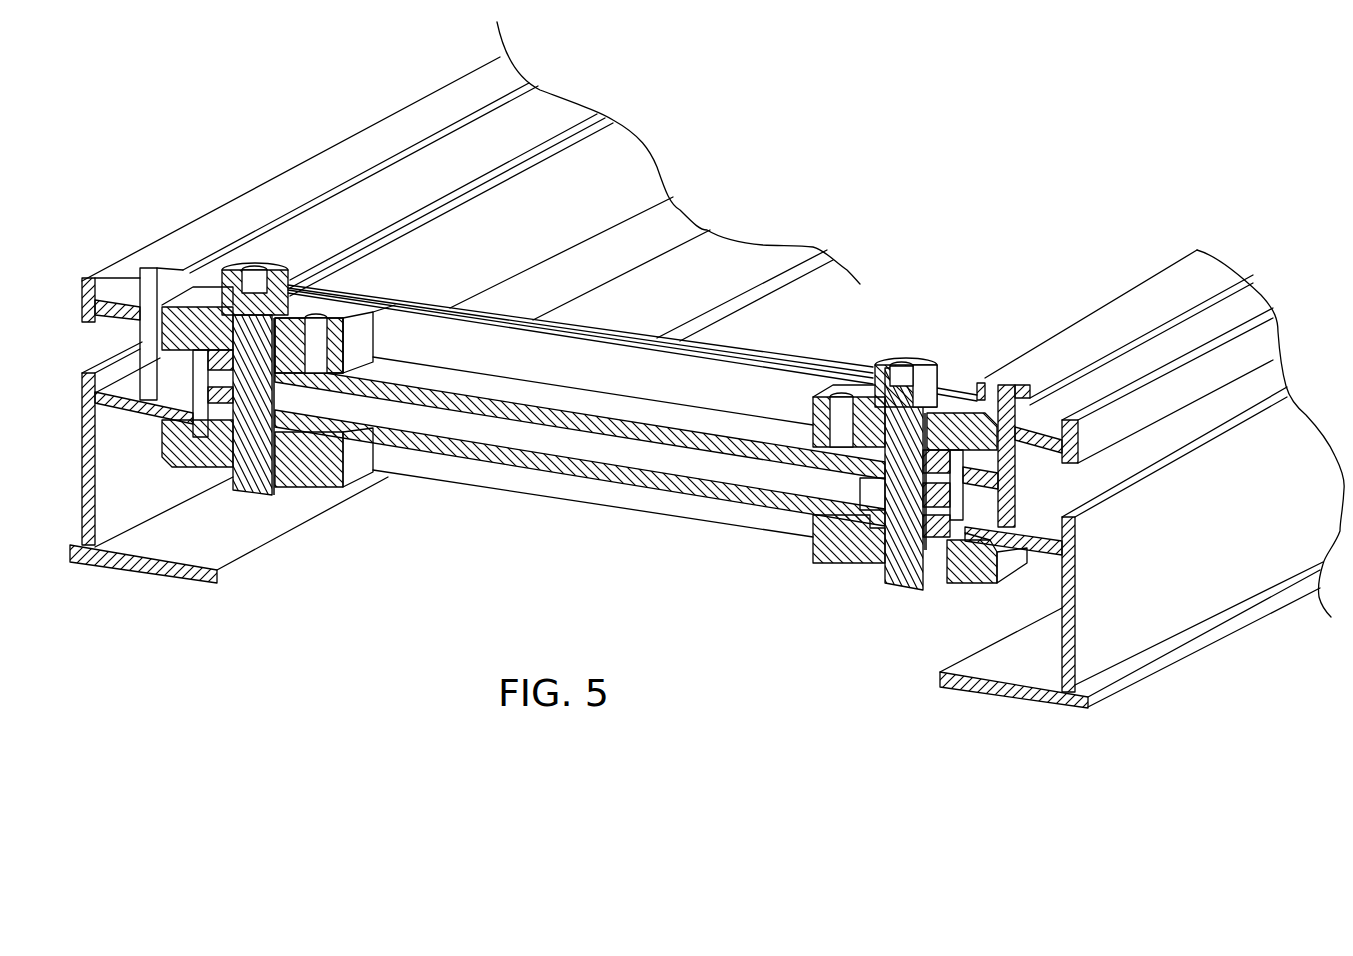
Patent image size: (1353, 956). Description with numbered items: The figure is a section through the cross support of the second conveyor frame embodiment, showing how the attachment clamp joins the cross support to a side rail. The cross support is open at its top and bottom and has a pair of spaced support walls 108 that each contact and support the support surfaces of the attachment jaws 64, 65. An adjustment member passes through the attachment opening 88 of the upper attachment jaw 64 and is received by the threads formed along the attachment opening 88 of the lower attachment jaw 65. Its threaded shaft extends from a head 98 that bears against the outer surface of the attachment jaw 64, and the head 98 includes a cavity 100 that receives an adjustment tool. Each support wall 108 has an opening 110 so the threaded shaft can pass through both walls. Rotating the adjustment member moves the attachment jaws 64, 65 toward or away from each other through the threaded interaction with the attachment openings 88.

The attachment jaw 64 is at (862, 415).
The lower attachment jaw 65 is at (852, 553).
The attachment opening 88 is at (937, 420).
The head 98 is at (938, 385).
The cavity 100 is at (917, 448).
The support walls 108 is at (580, 417).
The opening 110 is at (885, 462).